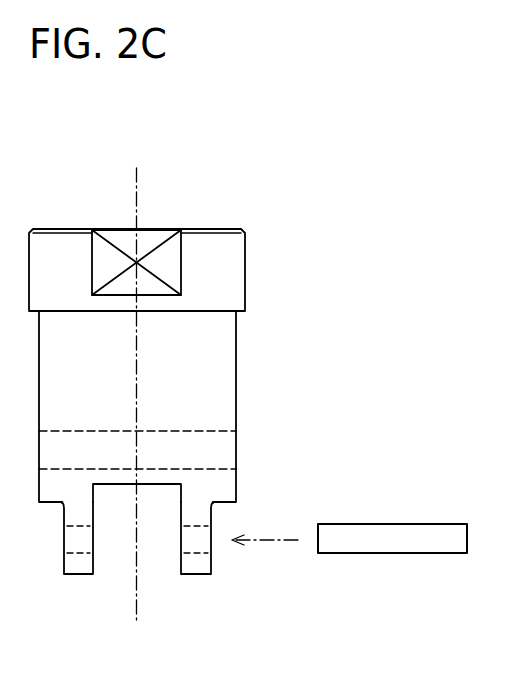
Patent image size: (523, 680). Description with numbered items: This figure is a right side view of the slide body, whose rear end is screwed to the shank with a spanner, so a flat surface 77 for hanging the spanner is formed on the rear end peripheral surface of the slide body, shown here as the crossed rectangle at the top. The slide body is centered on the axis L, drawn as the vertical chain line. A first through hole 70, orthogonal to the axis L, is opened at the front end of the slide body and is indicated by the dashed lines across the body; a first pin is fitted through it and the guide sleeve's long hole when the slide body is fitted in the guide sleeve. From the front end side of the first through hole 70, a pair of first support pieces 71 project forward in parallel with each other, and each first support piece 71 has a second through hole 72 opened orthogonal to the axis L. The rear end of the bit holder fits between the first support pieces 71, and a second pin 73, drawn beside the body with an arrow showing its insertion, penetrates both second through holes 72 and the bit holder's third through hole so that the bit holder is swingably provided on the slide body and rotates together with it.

The first through hole 70 is at (210, 470).
The first support pieces 71 is at (75, 576).
The second through hole 72 is at (212, 547).
The second pin 73 is at (407, 524).
The flat surface 77 is at (152, 236).
The axis L is at (137, 353).